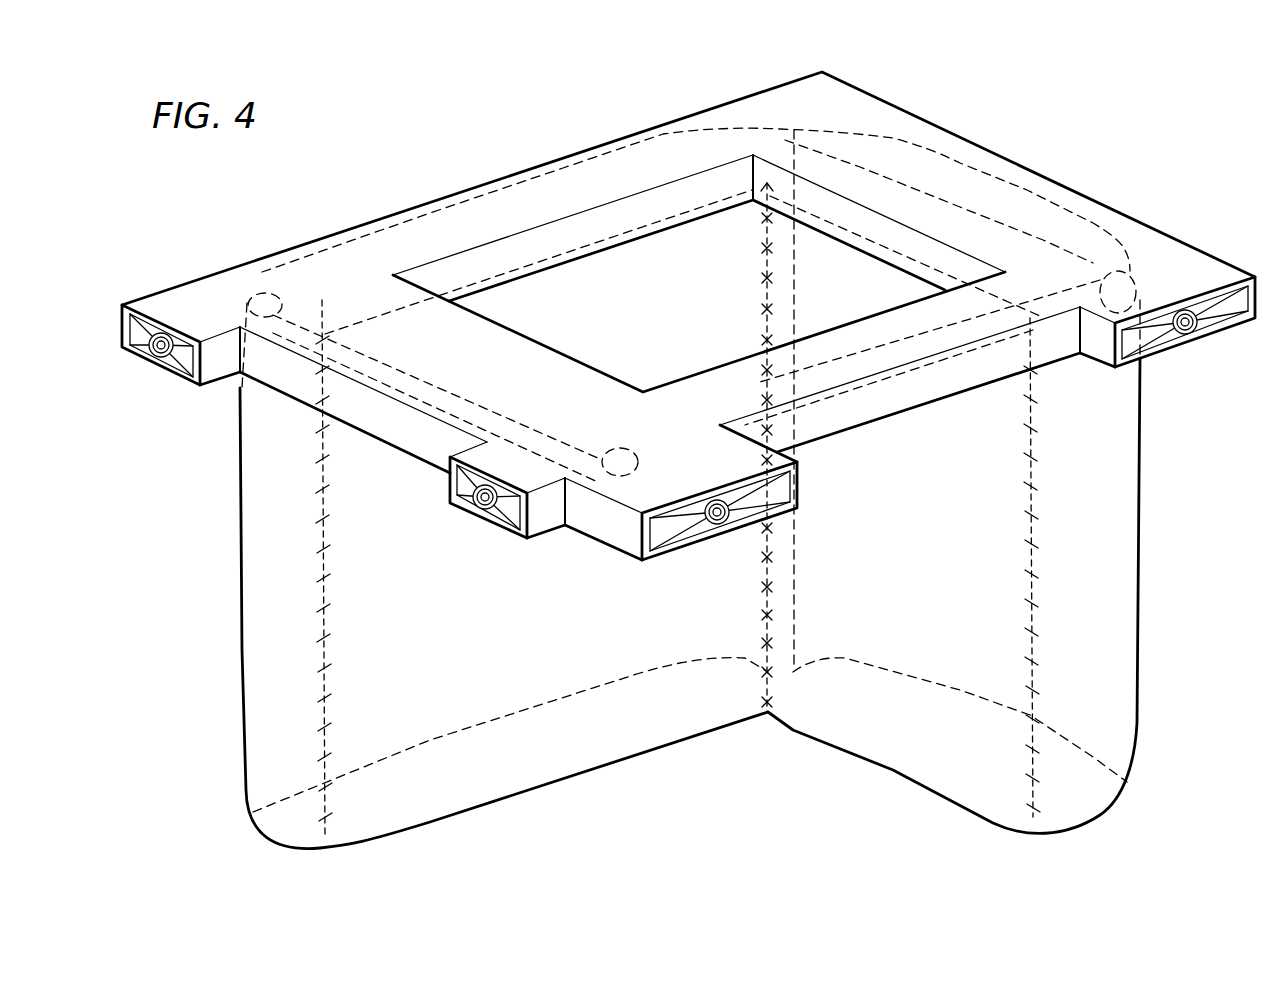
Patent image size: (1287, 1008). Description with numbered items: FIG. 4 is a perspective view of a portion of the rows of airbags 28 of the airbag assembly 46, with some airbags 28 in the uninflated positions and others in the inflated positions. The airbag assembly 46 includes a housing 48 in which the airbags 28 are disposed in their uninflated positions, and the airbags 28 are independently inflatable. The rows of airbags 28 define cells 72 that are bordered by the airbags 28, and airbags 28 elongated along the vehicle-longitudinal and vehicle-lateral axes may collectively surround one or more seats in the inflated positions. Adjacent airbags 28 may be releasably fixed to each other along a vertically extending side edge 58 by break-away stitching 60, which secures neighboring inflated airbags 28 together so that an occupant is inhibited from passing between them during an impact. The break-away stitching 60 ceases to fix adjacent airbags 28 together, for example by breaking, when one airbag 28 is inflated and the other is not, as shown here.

The airbag 28 is at (513, 417).
The airbag assembly 46 is at (692, 316).
The housing 48 is at (1200, 265).
The vertically extending side edge 58 is at (333, 596).
The break-away stitching 60 is at (326, 626).
The cell 72 is at (668, 278).